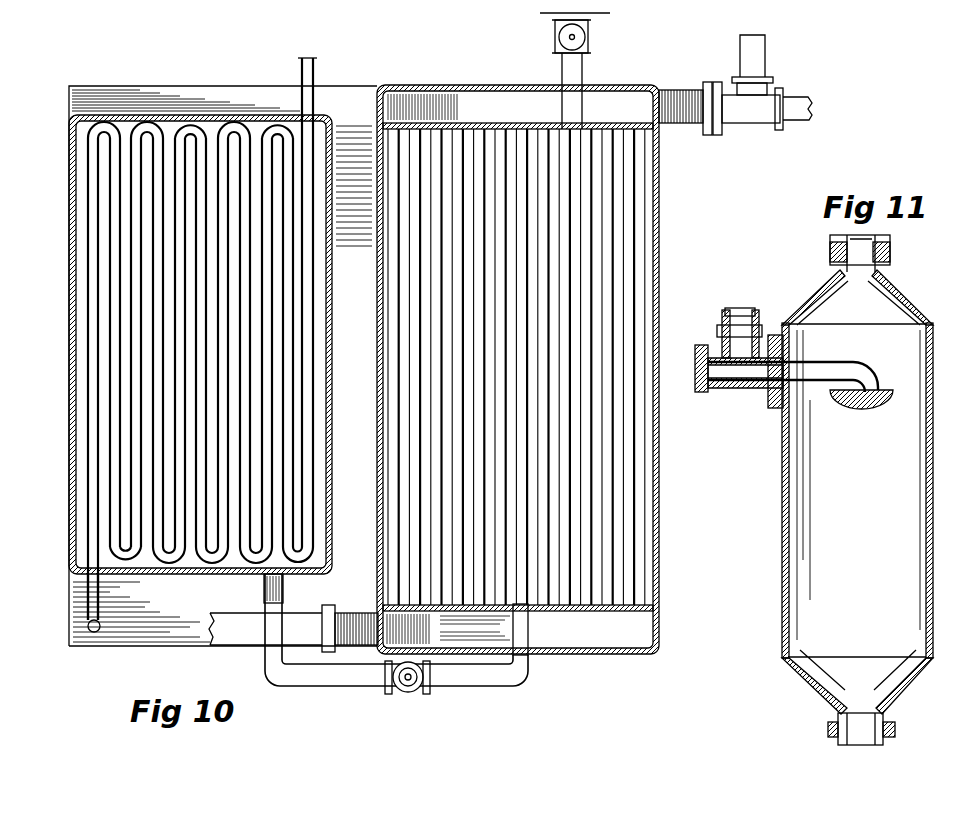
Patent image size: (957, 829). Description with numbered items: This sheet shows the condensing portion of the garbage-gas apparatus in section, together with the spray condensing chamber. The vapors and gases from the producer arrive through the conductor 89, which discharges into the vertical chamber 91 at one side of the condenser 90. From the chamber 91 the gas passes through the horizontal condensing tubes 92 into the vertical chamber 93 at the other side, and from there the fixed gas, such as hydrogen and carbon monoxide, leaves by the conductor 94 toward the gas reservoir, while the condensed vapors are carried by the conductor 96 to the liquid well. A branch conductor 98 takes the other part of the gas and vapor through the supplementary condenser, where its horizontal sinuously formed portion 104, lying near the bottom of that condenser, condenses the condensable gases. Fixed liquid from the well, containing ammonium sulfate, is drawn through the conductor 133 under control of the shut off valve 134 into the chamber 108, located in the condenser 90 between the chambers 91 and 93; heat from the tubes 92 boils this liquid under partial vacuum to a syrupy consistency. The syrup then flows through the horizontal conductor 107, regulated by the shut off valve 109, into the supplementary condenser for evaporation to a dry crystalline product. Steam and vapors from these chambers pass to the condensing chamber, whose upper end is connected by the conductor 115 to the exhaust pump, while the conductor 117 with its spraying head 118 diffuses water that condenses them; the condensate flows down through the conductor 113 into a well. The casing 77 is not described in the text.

In FIG. 10, the water tank casing 77 is at (67, 213).
In FIG. 10, the conductor 89 is at (237, 623).
In FIG. 10, the condenser 90 is at (660, 504).
In FIG. 10, the vertical chamber 91 is at (618, 597).
In FIG. 10, the horizontal condensing tubes 92 is at (638, 595).
In FIG. 10, the vertical chamber 93 is at (518, 111).
In FIG. 10, the conductor 94 is at (798, 118).
In FIG. 10, the conductor 96 is at (767, 52).
In FIG. 10, the branch conductor 98 is at (101, 595).
In FIG. 10, the sinuously formed portion 104 is at (312, 478).
In FIG. 10, the horizontal conductor 107 is at (396, 647).
In FIG. 10, the chamber 108 is at (627, 538).
In FIG. 10, the shut off valve 109 is at (408, 694).
In FIG. 11, the conductor 113 is at (858, 738).
In FIG. 11, the conductor 115 is at (882, 242).
In FIG. 11, the conductor 117 is at (828, 362).
In FIG. 11, the spraying head 118 is at (868, 409).
In FIG. 10, the conductor 133 is at (570, 103).
In FIG. 10, the shut off valve 134 is at (552, 48).